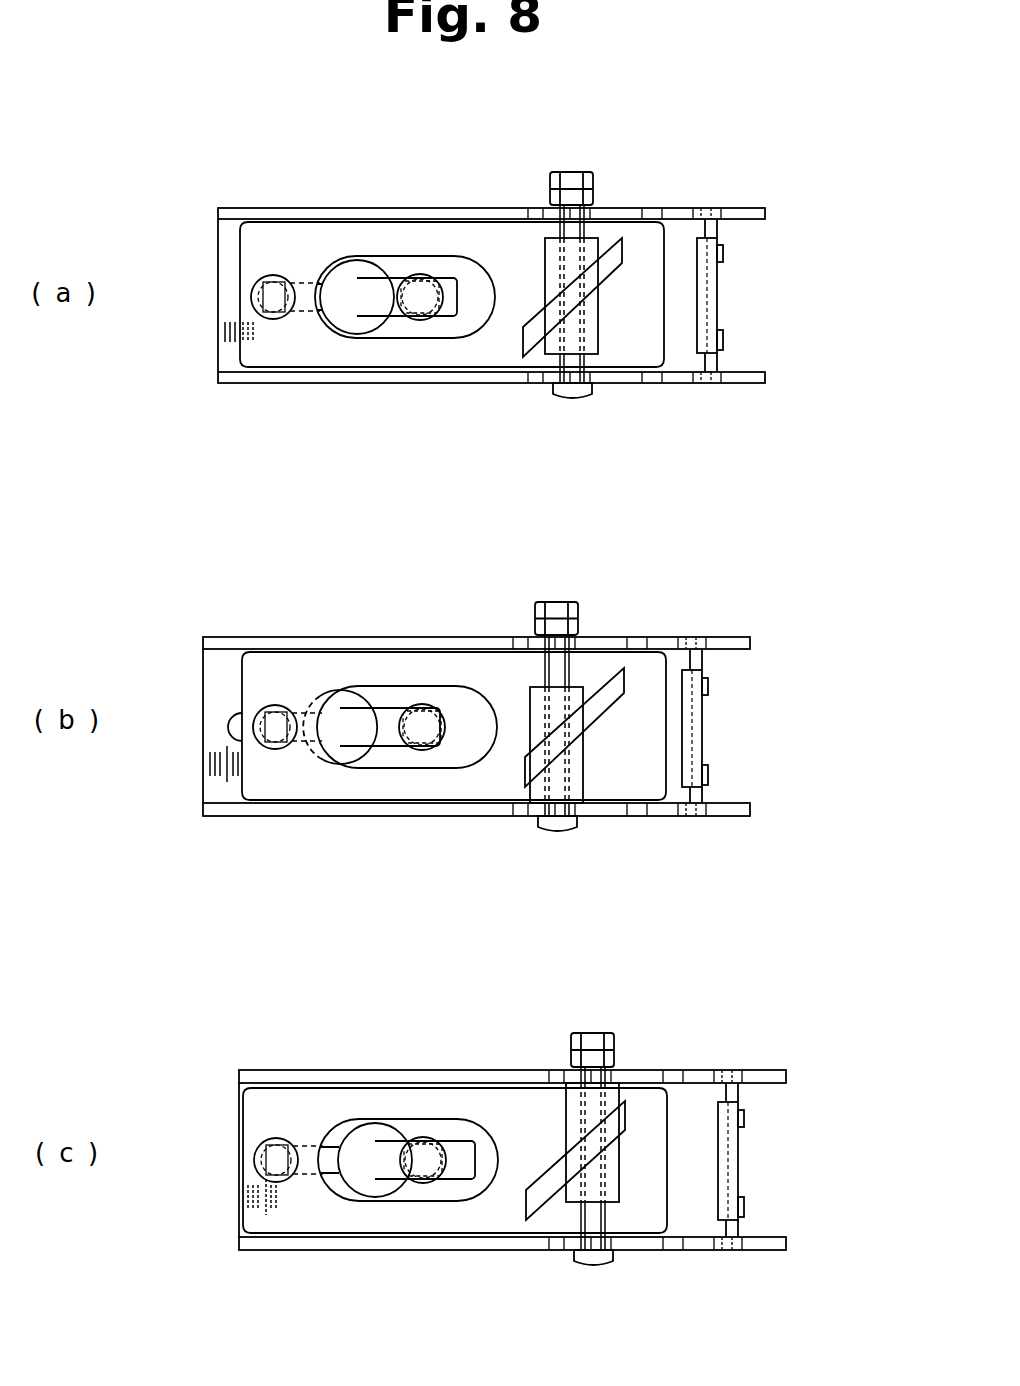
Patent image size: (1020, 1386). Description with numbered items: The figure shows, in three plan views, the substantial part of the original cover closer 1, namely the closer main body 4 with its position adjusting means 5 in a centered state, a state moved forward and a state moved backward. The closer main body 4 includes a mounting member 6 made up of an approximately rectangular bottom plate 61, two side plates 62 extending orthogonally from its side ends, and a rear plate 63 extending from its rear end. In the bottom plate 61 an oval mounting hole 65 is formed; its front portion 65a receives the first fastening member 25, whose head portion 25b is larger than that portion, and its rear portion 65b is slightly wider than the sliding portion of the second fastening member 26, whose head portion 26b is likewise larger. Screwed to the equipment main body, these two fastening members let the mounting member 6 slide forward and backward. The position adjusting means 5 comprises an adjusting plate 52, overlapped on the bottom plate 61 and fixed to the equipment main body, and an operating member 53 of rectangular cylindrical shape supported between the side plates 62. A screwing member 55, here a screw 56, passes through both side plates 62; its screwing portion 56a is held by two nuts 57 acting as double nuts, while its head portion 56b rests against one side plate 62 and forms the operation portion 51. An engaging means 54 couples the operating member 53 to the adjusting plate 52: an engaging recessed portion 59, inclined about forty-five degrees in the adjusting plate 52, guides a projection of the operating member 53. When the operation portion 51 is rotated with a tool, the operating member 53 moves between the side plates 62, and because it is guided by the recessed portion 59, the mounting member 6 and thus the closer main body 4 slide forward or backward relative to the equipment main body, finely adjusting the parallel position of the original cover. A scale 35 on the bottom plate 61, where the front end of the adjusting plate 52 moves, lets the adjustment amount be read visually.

In FIG. 8A, the original cover closer 1 is at (803, 212).
In FIG. 8B, the original cover closer 1 is at (787, 650).
In FIG. 8C, the original cover closer 1 is at (822, 1080).
In FIG. 8A, the closer main body 4 is at (212, 200).
In FIG. 8B, the closer main body 4 is at (198, 634).
In FIG. 8C, the closer main body 4 is at (234, 1066).
In FIG. 8A, the position adjusting means 5 is at (645, 196).
In FIG. 8B, the position adjusting means 5 is at (638, 626).
In FIG. 8C, the position adjusting means 5 is at (668, 1058).
In FIG. 8A, the mounting member 6 is at (215, 247).
In FIG. 8B, the mounting member 6 is at (200, 680).
In FIG. 8C, the mounting member 6 is at (236, 1114).
In FIG. 8A, the first fastening member 25 is at (276, 272).
In FIG. 8B, the first fastening member 25 is at (277, 700).
In FIG. 8C, the first fastening member 25 is at (280, 1134).
In FIG. 8A, the head portion 25b is at (262, 292).
In FIG. 8B, the head portion 25b is at (262, 720).
In FIG. 8C, the head portion 25b is at (265, 1153).
In FIG. 8A, the second fastening member 26 is at (417, 270).
In FIG. 8B, the second fastening member 26 is at (420, 698).
In FIG. 8C, the second fastening member 26 is at (423, 1130).
In FIG. 8A, the head portion 26b is at (393, 322).
In FIG. 8B, the head portion 26b is at (440, 752).
In FIG. 8C, the head portion 26b is at (410, 1188).
In FIG. 8A, the scale 35 is at (214, 335).
In FIG. 8B, the scale 35 is at (201, 768).
In FIG. 8C, the scale 35 is at (233, 1203).
In FIG. 8A, the operation portion 51 is at (587, 368).
In FIG. 8B, the operation portion 51 is at (570, 808).
In FIG. 8C, the operation portion 51 is at (602, 1252).
In FIG. 8A, the adjusting plate 52 is at (257, 232).
In FIG. 8B, the adjusting plate 52 is at (259, 660).
In FIG. 8C, the adjusting plate 52 is at (268, 1095).
In FIG. 8A, the operating member 53 is at (545, 253).
In FIG. 8B, the operating member 53 is at (531, 690).
In FIG. 8C, the operating member 53 is at (566, 1115).
In FIG. 8A, the engaging means 54 is at (636, 248).
In FIG. 8A, the screwing member 55 is at (576, 405).
In FIG. 8B, the screwing member 55 is at (563, 841).
In FIG. 8C, the screwing member 55 is at (599, 1270).
In FIG. 8A, the screw 56 is at (577, 228).
In FIG. 8B, the screw 56 is at (562, 660).
In FIG. 8C, the screw 56 is at (655, 1250).
In FIG. 8A, the screwing portion 56a is at (640, 372).
In FIG. 8B, the screwing portion 56a is at (572, 670).
In FIG. 8C, the screwing portion 56a is at (630, 1250).
In FIG. 8A, the head portion 56b is at (556, 400).
In FIG. 8B, the head portion 56b is at (543, 837).
In FIG. 8C, the head portion 56b is at (578, 1266).
In FIG. 8A, the nuts 57 is at (550, 197).
In FIG. 8B, the nuts 57 is at (535, 625).
In FIG. 8C, the nuts 57 is at (570, 1057).
In FIG. 8A, the engaging recessed portion 59 is at (590, 262).
In FIG. 8B, the engaging recessed portion 59 is at (623, 669).
In FIG. 8C, the engaging recessed portion 59 is at (538, 1216).
In FIG. 8A, the bottom plate 61 is at (680, 328).
In FIG. 8B, the bottom plate 61 is at (672, 760).
In FIG. 8C, the bottom plate 61 is at (705, 1192).
In FIG. 8A, the side plates 62 is at (452, 220).
In FIG. 8B, the side plates 62 is at (437, 649).
In FIG. 8C, the side plates 62 is at (470, 1082).
In FIG. 8A, the rear plate 63 is at (722, 270).
In FIG. 8B, the rear plate 63 is at (706, 703).
In FIG. 8C, the rear plate 63 is at (743, 1135).
In FIG. 8A, the mounting hole 65 is at (357, 275).
In FIG. 8B, the mounting hole 65 is at (345, 705).
In FIG. 8C, the mounting hole 65 is at (375, 1135).
In FIG. 8A, the front portion 65a is at (305, 316).
In FIG. 8B, the front portion 65a is at (228, 728).
In FIG. 8C, the front portion 65a is at (310, 1173).
In FIG. 8A, the rear portion 65b is at (464, 336).
In FIG. 8B, the rear portion 65b is at (395, 768).
In FIG. 8C, the rear portion 65b is at (478, 1188).